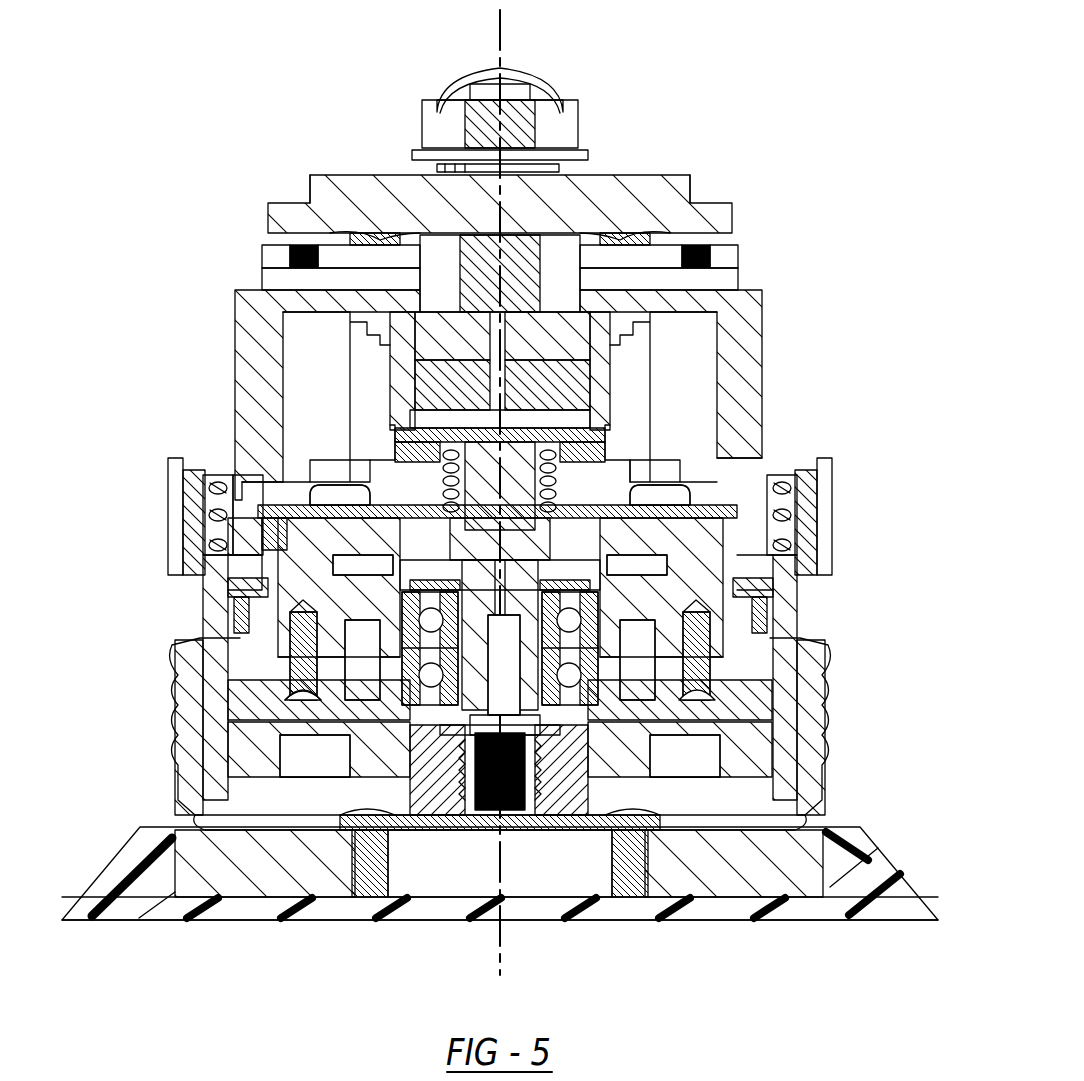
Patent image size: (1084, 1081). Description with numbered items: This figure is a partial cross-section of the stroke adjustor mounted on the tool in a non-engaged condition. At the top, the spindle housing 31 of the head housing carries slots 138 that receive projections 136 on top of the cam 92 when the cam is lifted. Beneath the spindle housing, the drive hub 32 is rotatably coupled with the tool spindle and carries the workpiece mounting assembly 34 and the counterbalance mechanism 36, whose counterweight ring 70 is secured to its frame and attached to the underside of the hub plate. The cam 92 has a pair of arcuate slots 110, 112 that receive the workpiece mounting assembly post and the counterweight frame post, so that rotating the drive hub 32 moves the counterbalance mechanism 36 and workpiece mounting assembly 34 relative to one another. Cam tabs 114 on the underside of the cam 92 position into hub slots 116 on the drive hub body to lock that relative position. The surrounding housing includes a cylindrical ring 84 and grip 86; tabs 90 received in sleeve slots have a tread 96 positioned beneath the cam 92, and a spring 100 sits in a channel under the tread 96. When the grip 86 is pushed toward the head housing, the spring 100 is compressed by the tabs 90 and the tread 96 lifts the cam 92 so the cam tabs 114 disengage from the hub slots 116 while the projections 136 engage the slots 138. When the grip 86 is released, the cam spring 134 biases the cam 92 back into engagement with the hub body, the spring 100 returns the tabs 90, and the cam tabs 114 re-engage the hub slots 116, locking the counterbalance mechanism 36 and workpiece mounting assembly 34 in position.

The spindle housing 31 is at (235, 318).
The drive hub 32 is at (288, 650).
The workpiece mounting assembly 34 is at (600, 630).
The counterbalance mechanism 36 is at (400, 655).
The counterweight ring 70 is at (680, 755).
The ring 84 is at (210, 745).
The grip 86 is at (172, 770).
The tabs 90 is at (225, 608).
The cam 92 is at (720, 500).
The tread 96 is at (262, 585).
The spring 100 is at (200, 490).
The arcuate slot 110 is at (262, 505).
The arcuate slot 112 is at (680, 420).
The cam tabs 114 is at (240, 505).
The hub slots 116 is at (262, 540).
The cam spring 134 is at (640, 420).
The projections 136 is at (330, 490).
The slots 138 is at (235, 290).